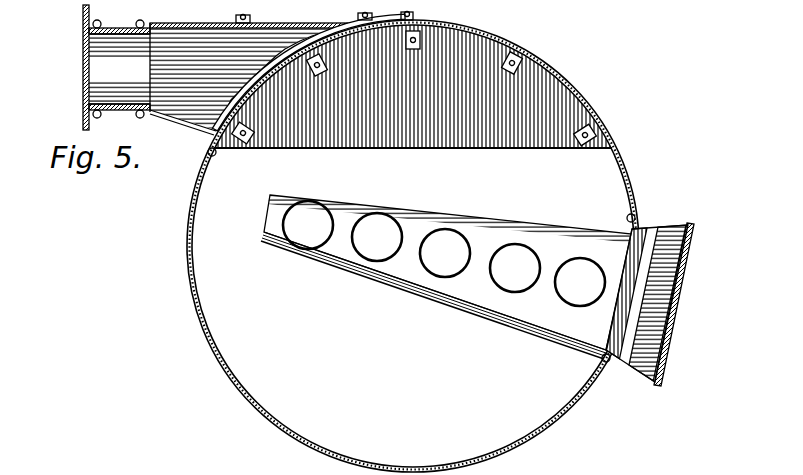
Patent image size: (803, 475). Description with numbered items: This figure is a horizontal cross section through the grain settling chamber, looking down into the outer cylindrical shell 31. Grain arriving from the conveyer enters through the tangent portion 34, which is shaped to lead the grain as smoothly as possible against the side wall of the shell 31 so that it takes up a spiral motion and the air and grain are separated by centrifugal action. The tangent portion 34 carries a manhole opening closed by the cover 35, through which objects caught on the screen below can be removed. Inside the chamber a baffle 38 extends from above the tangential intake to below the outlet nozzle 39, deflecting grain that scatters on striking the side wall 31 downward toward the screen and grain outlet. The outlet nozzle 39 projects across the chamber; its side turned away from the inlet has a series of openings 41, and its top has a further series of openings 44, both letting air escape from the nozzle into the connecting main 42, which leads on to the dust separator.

The outer cylindrical shell 31 is at (196, 300).
The tangent portion 34 is at (167, 82).
The manhole cover 35 is at (373, 21).
The baffle 38 is at (460, 132).
The outlet nozzle 39 is at (446, 276).
The series of openings 41 is at (480, 303).
The connecting main 42 is at (661, 298).
The series of openings 44 is at (577, 276).